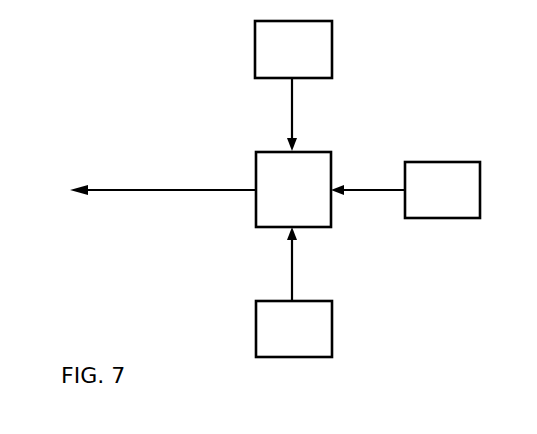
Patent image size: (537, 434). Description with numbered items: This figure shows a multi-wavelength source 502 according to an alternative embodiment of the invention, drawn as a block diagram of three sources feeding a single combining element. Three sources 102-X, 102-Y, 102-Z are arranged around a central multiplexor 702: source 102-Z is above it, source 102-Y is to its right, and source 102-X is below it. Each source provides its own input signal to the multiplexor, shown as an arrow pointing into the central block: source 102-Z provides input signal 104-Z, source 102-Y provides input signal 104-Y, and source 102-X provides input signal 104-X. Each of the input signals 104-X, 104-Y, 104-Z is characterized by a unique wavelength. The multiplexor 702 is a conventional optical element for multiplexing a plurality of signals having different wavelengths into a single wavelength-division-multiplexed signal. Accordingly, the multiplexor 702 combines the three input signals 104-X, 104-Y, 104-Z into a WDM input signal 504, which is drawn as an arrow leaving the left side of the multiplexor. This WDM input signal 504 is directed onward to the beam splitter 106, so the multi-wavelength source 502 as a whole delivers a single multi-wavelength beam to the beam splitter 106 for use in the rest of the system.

The multiplexor 702 is at (293, 189).
The source 102-Z is at (293, 49).
The input signal 104-Z is at (292, 115).
The source 102-Y is at (442, 190).
The input signal 104-Y is at (375, 190).
The source 102-X is at (294, 329).
The input signal 104-X is at (292, 263).
The WDM input signal 504 is at (180, 190).
The beam splitter 106 is at (111, 246).
The multi-wavelength source 502 is at (110, 71).